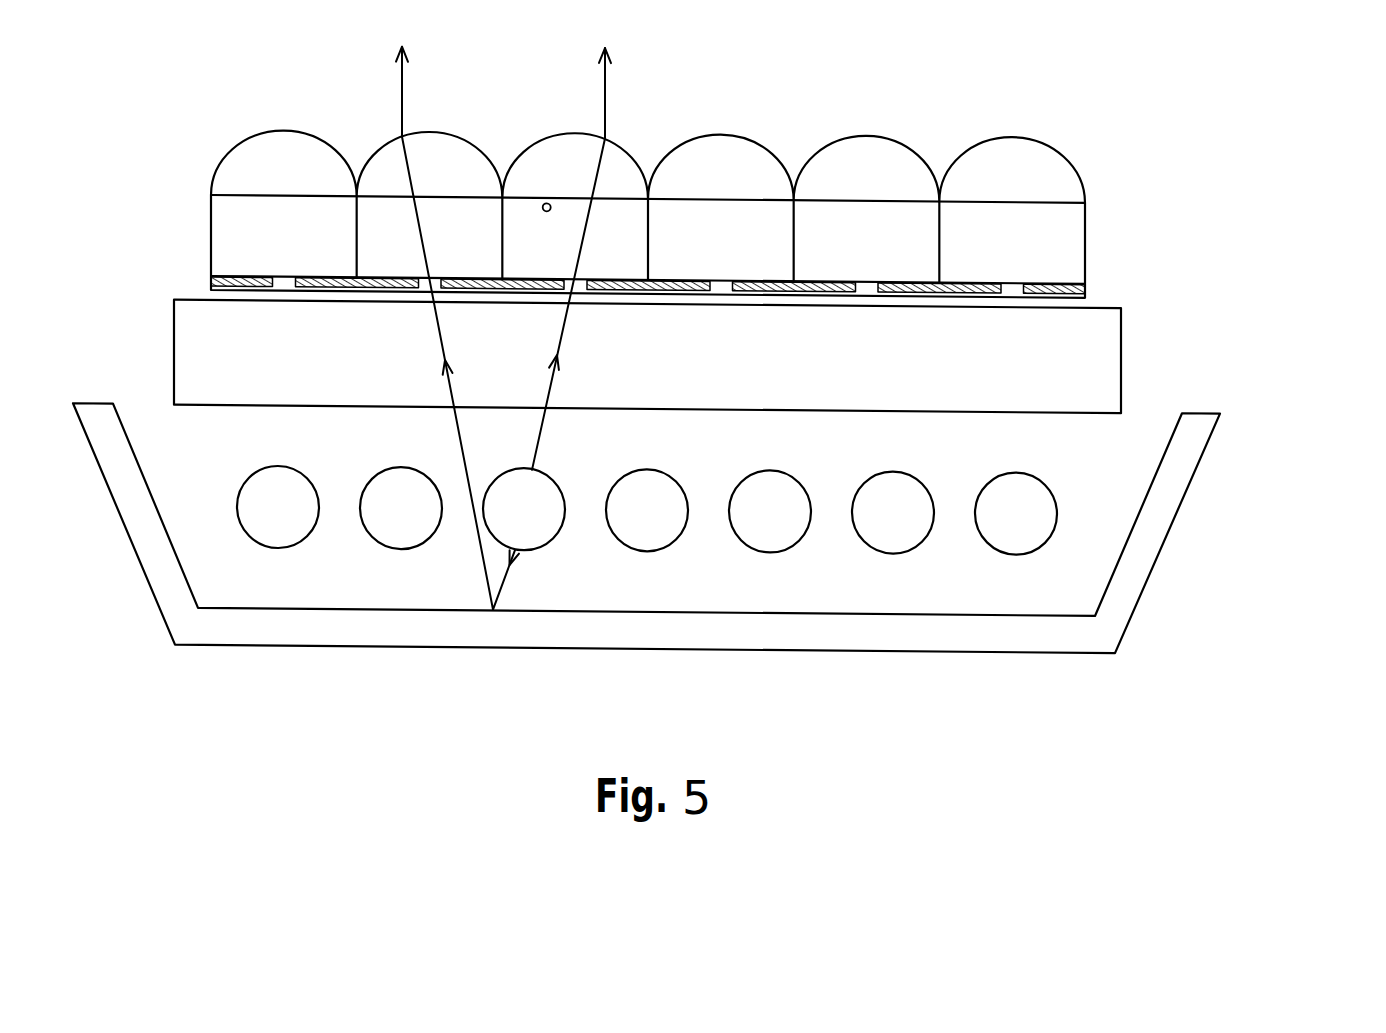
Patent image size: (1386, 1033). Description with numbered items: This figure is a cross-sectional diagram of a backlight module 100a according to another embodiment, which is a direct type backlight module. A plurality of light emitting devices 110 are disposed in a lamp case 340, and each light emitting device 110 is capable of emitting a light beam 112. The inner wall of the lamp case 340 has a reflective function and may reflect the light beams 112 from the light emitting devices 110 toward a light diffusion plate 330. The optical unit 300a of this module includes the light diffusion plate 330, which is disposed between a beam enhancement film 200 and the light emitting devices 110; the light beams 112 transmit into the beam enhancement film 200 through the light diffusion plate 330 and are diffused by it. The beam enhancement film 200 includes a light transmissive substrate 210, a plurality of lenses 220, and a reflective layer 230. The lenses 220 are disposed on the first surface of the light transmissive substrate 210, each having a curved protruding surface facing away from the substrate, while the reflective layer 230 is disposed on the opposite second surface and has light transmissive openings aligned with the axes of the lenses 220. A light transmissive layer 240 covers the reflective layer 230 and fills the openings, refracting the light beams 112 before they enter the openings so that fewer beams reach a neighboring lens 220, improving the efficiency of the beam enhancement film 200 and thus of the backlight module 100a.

The backlight module 100a is at (715, 384).
The light emitting device 110 is at (1020, 523).
The light beam 112 is at (503, 584).
The beam enhancement film 200 is at (749, 216).
The light transmissive substrate 210 is at (1060, 250).
The lenses 220 is at (1048, 170).
The reflective layer 230 is at (1085, 279).
The light transmissive layer 240 is at (1013, 285).
The optical unit 300a is at (765, 358).
The light diffusion plate 330 is at (1083, 377).
The lamp case 340 is at (1163, 501).